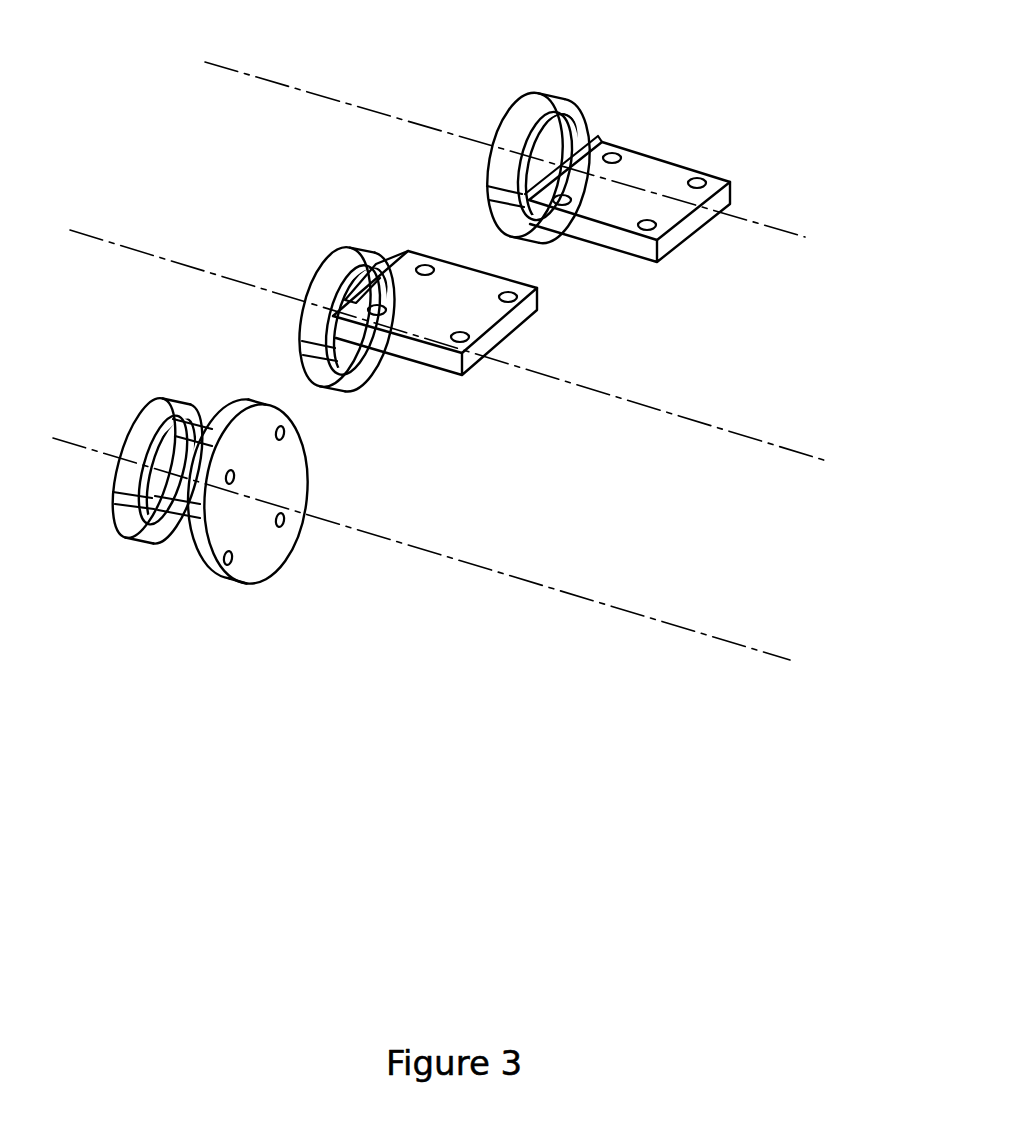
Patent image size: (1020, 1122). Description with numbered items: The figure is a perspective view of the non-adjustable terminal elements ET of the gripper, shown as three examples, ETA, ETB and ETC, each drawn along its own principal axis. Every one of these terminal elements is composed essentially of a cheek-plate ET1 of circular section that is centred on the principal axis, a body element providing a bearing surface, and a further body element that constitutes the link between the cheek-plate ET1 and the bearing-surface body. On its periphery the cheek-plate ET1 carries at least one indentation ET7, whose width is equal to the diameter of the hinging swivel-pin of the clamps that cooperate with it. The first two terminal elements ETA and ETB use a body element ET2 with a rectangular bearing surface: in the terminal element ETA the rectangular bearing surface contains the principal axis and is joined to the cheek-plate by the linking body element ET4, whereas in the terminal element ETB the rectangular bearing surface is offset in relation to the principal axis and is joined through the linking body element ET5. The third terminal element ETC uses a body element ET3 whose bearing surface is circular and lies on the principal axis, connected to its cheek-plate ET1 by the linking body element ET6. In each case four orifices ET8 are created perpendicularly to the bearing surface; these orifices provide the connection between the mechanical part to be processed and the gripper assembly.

The non-adjustable terminal elements ET is at (268, 208).
The cheek-plate ET1 is at (42, 418).
The body element ET2 is at (634, 166).
The body element ET3 is at (282, 480).
The body element ET4 is at (591, 140).
The body element ET5 is at (370, 275).
The body element ET6 is at (168, 421).
The indentation ET7 is at (68, 494).
The orifices ET8 is at (702, 181).
The non-adjustable terminal element ETA is at (724, 267).
The non-adjustable terminal element ETB is at (531, 358).
The non-adjustable terminal element ETC is at (335, 515).